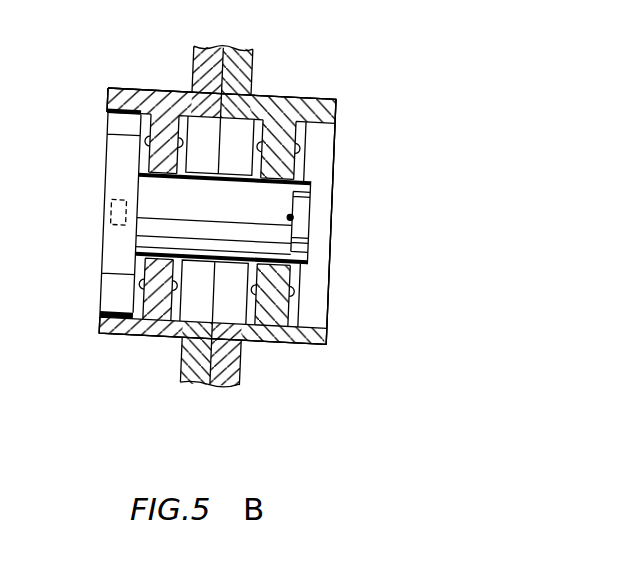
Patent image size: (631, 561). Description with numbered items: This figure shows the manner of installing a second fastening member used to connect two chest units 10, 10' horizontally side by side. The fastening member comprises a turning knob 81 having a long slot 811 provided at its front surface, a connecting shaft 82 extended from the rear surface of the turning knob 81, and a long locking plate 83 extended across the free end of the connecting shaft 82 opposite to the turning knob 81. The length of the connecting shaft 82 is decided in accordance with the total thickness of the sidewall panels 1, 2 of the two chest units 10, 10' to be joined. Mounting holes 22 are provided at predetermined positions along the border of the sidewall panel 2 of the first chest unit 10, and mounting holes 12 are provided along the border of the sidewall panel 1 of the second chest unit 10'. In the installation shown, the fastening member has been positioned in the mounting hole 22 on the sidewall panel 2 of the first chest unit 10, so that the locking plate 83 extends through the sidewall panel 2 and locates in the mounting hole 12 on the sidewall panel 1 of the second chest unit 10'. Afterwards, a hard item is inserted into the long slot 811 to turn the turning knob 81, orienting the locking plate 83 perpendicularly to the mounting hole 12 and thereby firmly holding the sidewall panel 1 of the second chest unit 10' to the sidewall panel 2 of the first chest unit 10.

The sidewall panel 1 is at (294, 110).
The sidewall panel 2 is at (160, 105).
The chest unit 10 is at (178, 183).
The chest unit 10' is at (216, 183).
The mounting hole 12 is at (311, 290).
The mounting hole 22 is at (130, 332).
The turning knob 81 is at (112, 290).
The long slot 811 is at (112, 213).
The connecting shaft 82 is at (252, 208).
The long locking plate 83 is at (298, 221).